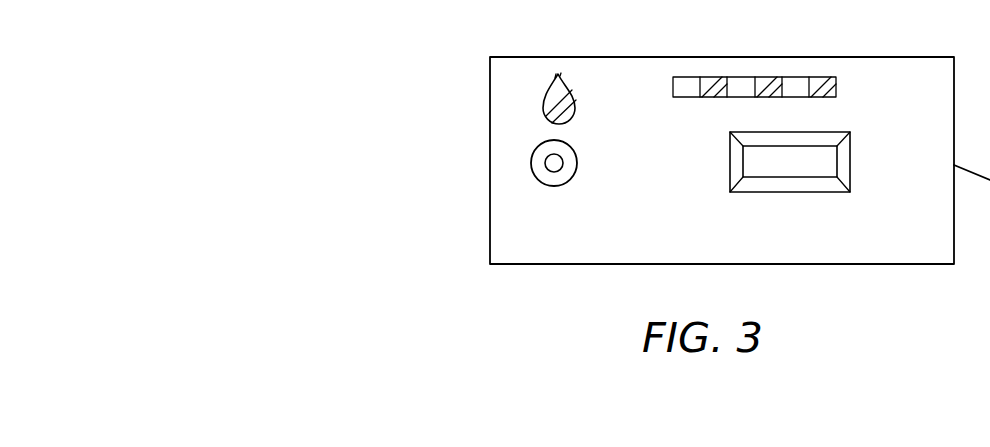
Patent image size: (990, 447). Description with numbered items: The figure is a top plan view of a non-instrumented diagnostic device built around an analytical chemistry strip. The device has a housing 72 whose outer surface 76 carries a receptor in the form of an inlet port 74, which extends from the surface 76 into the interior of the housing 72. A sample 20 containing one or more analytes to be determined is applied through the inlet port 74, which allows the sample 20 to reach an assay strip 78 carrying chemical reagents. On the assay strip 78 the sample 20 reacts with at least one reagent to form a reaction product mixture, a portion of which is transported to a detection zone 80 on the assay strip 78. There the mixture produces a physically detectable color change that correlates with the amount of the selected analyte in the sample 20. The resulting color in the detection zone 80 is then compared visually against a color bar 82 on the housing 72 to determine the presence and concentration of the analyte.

The sample 20 is at (562, 98).
The housing 72 is at (489, 133).
The inlet port 74 is at (554, 163).
The surface 76 is at (887, 90).
The assay strip 78 is at (786, 156).
The detection zone 80 is at (810, 163).
The color bar 82 is at (743, 85).